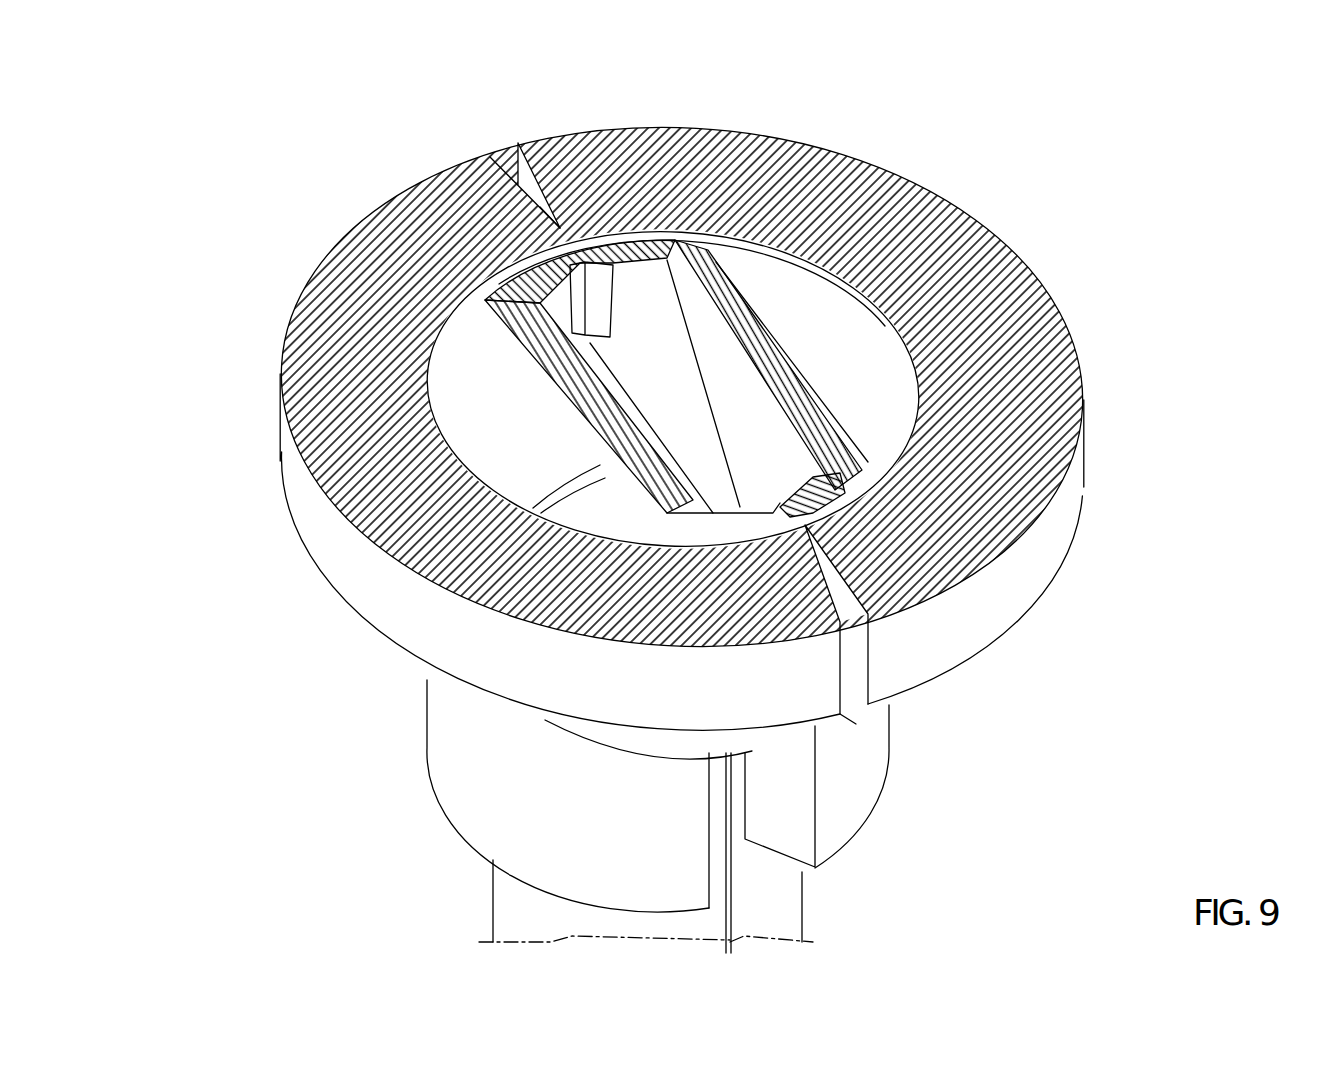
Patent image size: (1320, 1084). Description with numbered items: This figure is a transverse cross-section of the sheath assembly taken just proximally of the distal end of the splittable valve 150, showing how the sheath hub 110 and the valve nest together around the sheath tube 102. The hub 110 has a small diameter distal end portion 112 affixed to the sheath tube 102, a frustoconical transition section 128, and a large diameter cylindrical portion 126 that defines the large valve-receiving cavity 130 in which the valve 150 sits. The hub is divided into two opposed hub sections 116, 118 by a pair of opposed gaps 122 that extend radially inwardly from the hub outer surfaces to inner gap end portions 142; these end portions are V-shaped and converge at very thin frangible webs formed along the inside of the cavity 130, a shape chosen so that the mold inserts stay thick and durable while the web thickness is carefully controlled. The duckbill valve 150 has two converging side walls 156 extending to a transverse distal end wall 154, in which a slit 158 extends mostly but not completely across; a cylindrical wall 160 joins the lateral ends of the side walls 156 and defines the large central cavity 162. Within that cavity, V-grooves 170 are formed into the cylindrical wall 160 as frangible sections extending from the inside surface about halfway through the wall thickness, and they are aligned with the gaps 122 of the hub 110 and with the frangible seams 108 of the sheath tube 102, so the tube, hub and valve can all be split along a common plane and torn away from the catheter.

The sheath tube 102 is at (488, 887).
The frangible sections 108 is at (732, 894).
The sheath hub 110 is at (281, 335).
The distal end portion 112 is at (835, 843).
The hub section 116 is at (297, 553).
The hub section 118 is at (1082, 404).
The gaps 122 is at (492, 158).
The large diameter cylindrical portion 126 is at (1078, 488).
The frustoconical transition section 128 is at (675, 653).
The valve-receiving cavity 130 is at (880, 442).
The inner gap end portions 142 is at (553, 227).
The splittable valve 150 is at (835, 395).
The distal end wall 154 is at (720, 503).
The side walls 156 is at (780, 377).
The slit 158 is at (623, 375).
The cylindrical wall 160 is at (643, 242).
The central cavity 162 is at (617, 433).
The V-grooves 170 is at (607, 303).